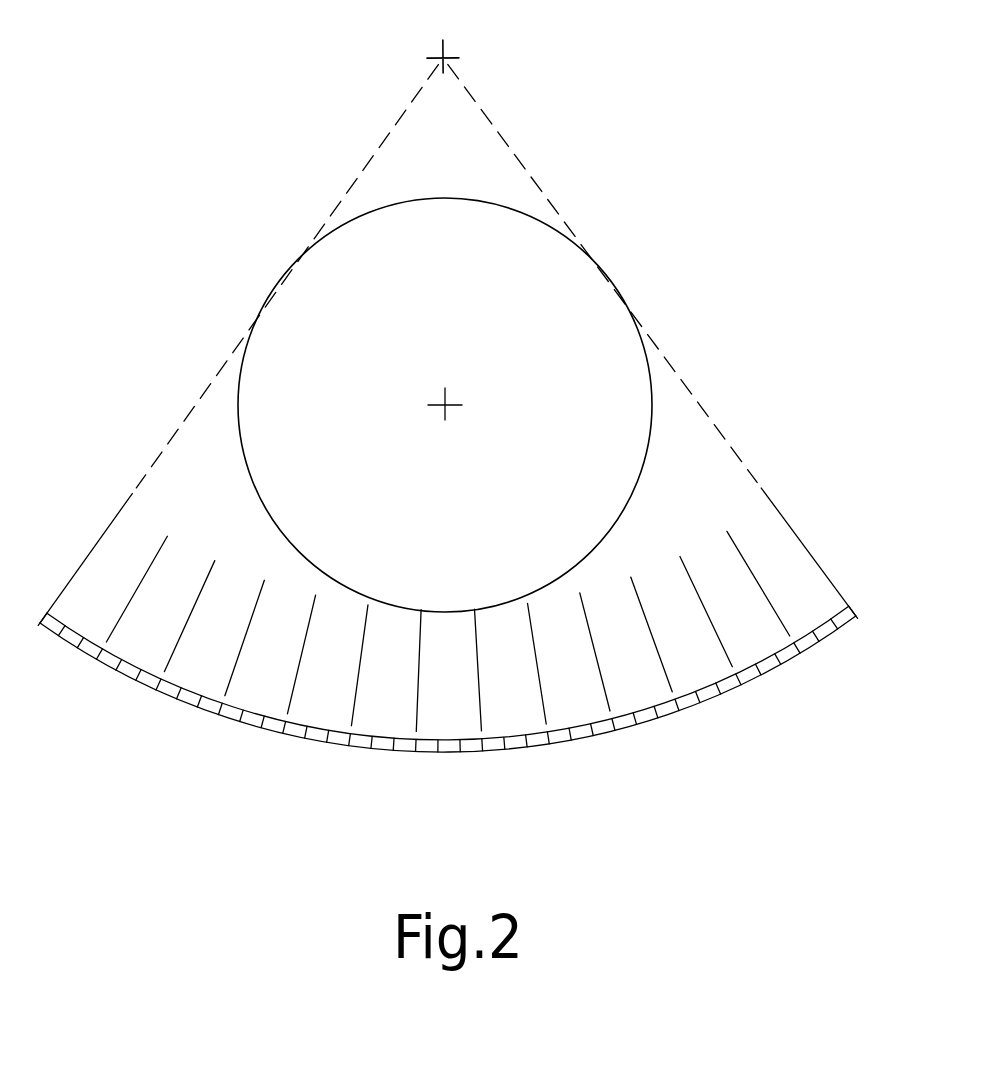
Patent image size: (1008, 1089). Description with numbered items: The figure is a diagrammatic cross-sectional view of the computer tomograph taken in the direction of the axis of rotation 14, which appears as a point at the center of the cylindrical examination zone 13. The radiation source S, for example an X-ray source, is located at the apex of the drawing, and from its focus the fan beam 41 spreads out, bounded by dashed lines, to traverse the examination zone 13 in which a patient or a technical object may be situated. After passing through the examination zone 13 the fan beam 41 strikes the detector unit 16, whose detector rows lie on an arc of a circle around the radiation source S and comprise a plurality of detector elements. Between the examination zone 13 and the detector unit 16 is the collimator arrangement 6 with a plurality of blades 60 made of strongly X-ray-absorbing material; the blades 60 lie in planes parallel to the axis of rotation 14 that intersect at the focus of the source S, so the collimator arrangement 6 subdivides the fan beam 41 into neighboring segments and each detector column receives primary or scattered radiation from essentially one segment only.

The radiation source S is at (446, 54).
The fan beam 41 is at (509, 148).
The collimator arrangement 6 is at (822, 529).
The examination zone 13 is at (651, 372).
The axis of rotation 14 is at (449, 400).
The blades 60 is at (115, 623).
The detector unit 16 is at (812, 648).